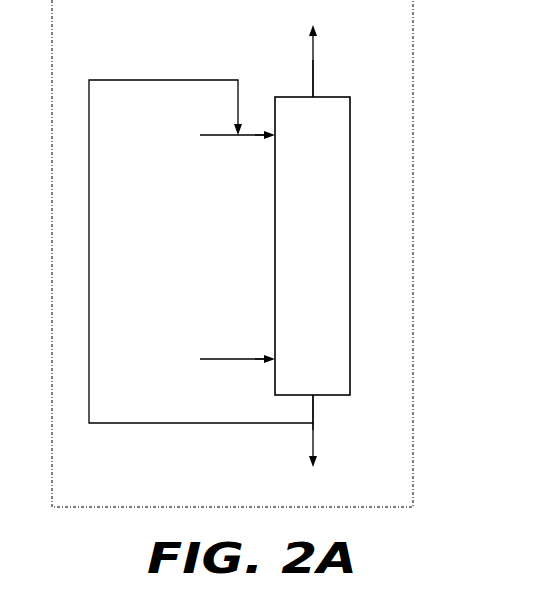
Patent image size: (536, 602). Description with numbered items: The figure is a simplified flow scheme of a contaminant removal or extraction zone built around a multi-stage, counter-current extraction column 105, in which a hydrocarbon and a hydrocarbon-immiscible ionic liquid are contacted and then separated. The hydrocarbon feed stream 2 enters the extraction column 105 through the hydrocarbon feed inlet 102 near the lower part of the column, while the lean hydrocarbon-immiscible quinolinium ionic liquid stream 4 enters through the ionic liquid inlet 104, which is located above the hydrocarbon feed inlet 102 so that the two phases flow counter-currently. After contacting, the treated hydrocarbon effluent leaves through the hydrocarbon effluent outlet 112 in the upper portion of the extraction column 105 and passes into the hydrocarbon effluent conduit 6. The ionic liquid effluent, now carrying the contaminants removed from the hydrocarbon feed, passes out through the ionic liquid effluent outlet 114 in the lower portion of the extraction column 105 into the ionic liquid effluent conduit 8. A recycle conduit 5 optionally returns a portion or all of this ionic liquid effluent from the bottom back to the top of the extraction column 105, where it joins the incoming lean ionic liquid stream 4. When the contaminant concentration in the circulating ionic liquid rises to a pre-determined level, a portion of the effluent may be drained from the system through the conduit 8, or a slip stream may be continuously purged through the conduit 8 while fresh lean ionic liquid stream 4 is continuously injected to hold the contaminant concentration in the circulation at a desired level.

The hydrocarbon feed stream 2 is at (228, 359).
The lean hydrocarbon-immiscible quinolinium ionic liquid stream 4 is at (229, 135).
The conduit 5 is at (189, 251).
The hydrocarbon effluent conduit 6 is at (313, 48).
The ionic liquid effluent conduit 8 is at (313, 448).
The hydrocarbon feed inlet 102 is at (275, 356).
The ionic liquid inlet 104 is at (274, 142).
The extraction column 105 is at (330, 256).
The hydrocarbon effluent outlet 112 is at (314, 97).
The ionic liquid effluent outlet 114 is at (315, 398).